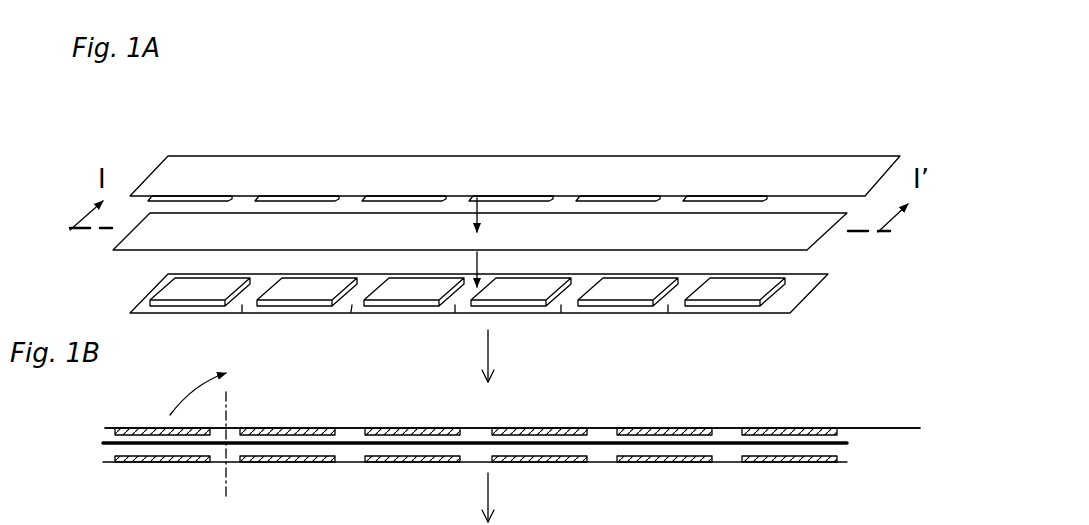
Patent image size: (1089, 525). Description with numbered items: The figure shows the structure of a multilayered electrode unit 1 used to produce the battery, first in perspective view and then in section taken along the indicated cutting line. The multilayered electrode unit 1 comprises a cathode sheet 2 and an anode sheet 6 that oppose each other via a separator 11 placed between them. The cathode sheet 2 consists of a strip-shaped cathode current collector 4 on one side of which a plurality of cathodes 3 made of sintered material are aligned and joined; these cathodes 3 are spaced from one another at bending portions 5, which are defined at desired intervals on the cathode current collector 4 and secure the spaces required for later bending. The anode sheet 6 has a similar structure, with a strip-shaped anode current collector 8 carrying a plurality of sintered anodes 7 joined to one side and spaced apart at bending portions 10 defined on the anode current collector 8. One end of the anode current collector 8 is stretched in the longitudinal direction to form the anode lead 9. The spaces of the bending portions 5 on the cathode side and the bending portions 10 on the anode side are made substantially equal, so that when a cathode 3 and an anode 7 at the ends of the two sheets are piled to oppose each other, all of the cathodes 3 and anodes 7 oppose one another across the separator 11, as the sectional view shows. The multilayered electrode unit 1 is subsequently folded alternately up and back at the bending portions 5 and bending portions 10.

In FIG. 1A, the multilayered electrode unit 1 is at (581, 233).
In FIG. 1B, the multilayered electrode unit 1 is at (576, 441).
In FIG. 1A, the cathode sheet 2 is at (557, 311).
In FIG. 1B, the cathode sheet 2 is at (543, 482).
In FIG. 1A, the cathode 3 is at (196, 292).
In FIG. 1B, the cathode 3 is at (150, 462).
In FIG. 1A, the cathode current collector 4 is at (799, 297).
In FIG. 1B, the cathode current collector 4 is at (834, 463).
In FIG. 1A, the bending portion 5 is at (455, 312).
In FIG. 1B, the bending portion 5 is at (230, 462).
In FIG. 1A, the anode sheet 6 is at (557, 160).
In FIG. 1B, the anode sheet 6 is at (544, 409).
In FIG. 1A, the anode 7 is at (203, 196).
In FIG. 1B, the anode 7 is at (128, 428).
In FIG. 1A, the anode current collector 8 is at (713, 167).
In FIG. 1B, the anode current collector 8 is at (796, 428).
In FIG. 1B, the anode lead 9 is at (888, 428).
In FIG. 1A, the bending portion 10 is at (353, 196).
In FIG. 1B, the bending portion 10 is at (238, 428).
In FIG. 1A, the separator 11 is at (807, 232).
In FIG. 1B, the separator 11 is at (847, 443).